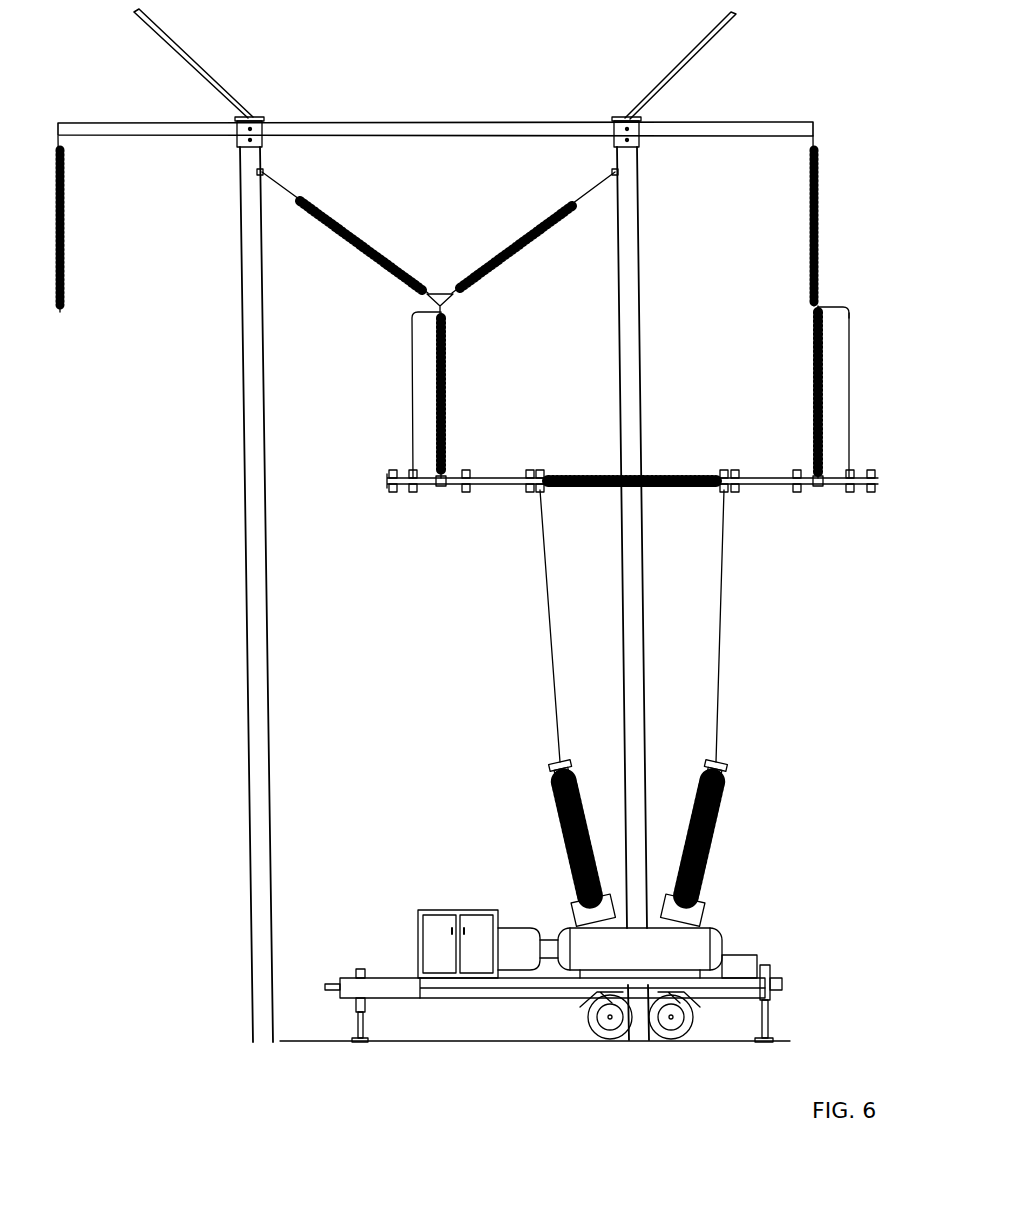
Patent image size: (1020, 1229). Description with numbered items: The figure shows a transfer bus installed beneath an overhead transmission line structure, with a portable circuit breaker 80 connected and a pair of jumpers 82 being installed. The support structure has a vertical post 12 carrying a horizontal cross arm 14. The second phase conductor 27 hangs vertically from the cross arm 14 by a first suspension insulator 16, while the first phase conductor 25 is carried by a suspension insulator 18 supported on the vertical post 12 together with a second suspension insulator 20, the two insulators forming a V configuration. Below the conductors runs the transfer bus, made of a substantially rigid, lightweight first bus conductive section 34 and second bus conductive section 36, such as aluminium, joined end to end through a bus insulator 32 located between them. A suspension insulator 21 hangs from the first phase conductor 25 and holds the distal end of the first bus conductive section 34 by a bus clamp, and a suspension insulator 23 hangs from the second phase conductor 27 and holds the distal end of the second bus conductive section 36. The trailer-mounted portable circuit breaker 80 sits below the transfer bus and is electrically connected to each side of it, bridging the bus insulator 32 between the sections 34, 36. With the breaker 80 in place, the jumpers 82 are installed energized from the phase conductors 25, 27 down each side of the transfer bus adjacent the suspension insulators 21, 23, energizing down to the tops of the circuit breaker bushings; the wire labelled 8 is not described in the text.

The conductor jumper 8 is at (851, 379).
The vertical post 12 is at (640, 276).
The horizontal cross arm 14 is at (700, 121).
The first suspension insulator 16 is at (822, 226).
The suspension insulator 18 is at (528, 238).
The second suspension insulator 20 is at (362, 244).
The suspension insulator 21 is at (443, 379).
The suspension insulator 23 is at (815, 367).
The first phase conductor 25 is at (447, 309).
The second phase conductor 27 is at (815, 309).
The bus insulator 32 is at (670, 475).
The first bus conductive section 34 is at (492, 476).
The second bus conductive section 36 is at (768, 473).
The portable circuit breaker 80 is at (770, 896).
The jumpers 82 is at (410, 393).